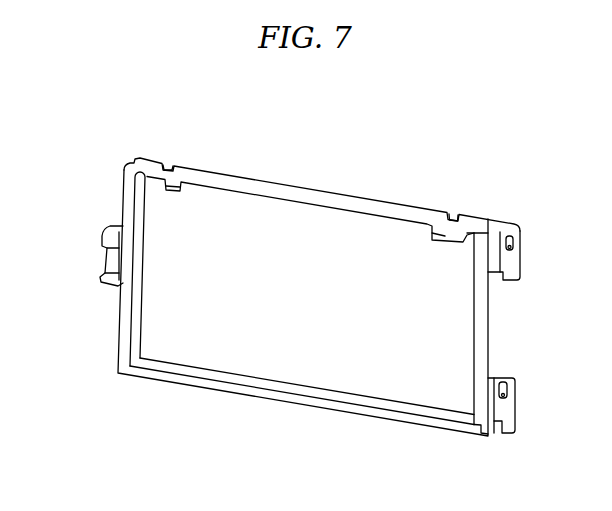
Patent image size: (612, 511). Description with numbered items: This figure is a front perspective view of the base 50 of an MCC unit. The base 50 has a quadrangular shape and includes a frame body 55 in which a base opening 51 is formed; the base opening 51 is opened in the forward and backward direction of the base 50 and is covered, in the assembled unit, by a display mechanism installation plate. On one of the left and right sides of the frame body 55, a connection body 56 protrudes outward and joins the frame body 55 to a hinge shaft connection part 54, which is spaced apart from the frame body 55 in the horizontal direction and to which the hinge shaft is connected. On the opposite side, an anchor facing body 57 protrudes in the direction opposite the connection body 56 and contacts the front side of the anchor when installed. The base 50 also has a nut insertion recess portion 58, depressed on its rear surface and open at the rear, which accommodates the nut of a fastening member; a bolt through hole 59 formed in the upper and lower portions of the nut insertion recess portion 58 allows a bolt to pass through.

The base 50 is at (514, 216).
The base opening 51 is at (247, 208).
The hinge shaft connection part 54 is at (512, 259).
The frame body 55 is at (291, 185).
The connection body 56 is at (492, 236).
The anchor facing body 57 is at (113, 262).
The nut insertion recess portion 58 is at (163, 186).
The bolt through hole 59 is at (168, 160).